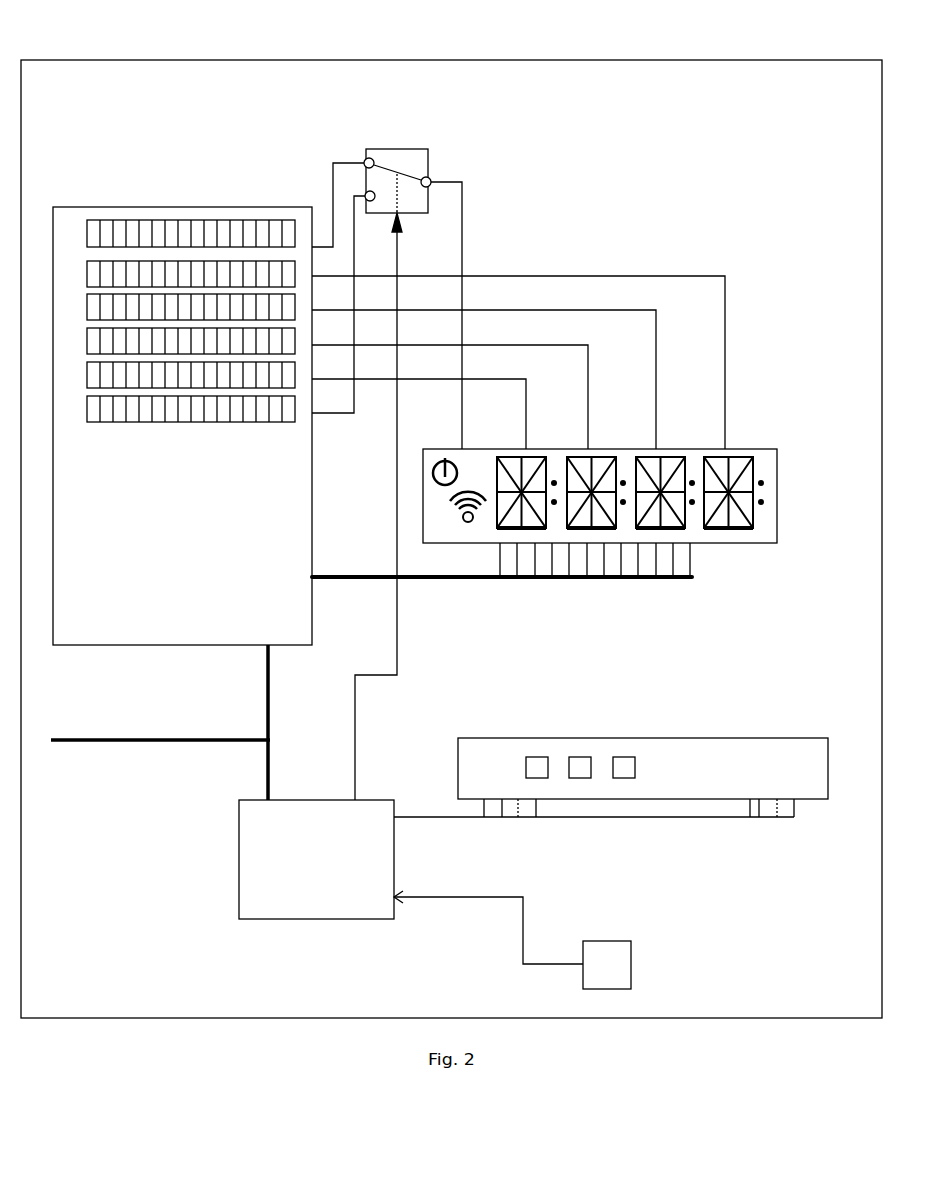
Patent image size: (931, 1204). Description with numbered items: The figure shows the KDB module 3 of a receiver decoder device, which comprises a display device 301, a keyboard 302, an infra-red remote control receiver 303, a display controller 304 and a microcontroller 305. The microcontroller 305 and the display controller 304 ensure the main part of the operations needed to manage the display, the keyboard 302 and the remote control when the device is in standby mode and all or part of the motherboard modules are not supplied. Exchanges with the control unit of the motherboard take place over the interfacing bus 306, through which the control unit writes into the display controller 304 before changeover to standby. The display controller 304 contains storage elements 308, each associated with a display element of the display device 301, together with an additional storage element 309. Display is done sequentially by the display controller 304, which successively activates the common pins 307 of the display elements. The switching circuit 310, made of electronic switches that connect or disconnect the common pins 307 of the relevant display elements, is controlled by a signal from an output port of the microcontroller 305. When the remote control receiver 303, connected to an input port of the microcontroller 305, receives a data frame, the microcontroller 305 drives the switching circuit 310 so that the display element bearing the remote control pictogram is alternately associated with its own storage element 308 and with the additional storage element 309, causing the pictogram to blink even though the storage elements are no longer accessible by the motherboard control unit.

The KDB module 3 is at (213, 60).
The display device 301 is at (796, 398).
The keyboard 302 is at (728, 738).
The infra-red remote control receiver 303 is at (726, 958).
The display controller 304 is at (155, 647).
The microcontroller 305 is at (394, 870).
The interfacing bus 306 is at (183, 742).
The common pins of the display elements 307 is at (572, 230).
The storage element 308 is at (165, 422).
The additional storage element 309 is at (122, 161).
The switching circuit 310 is at (410, 149).